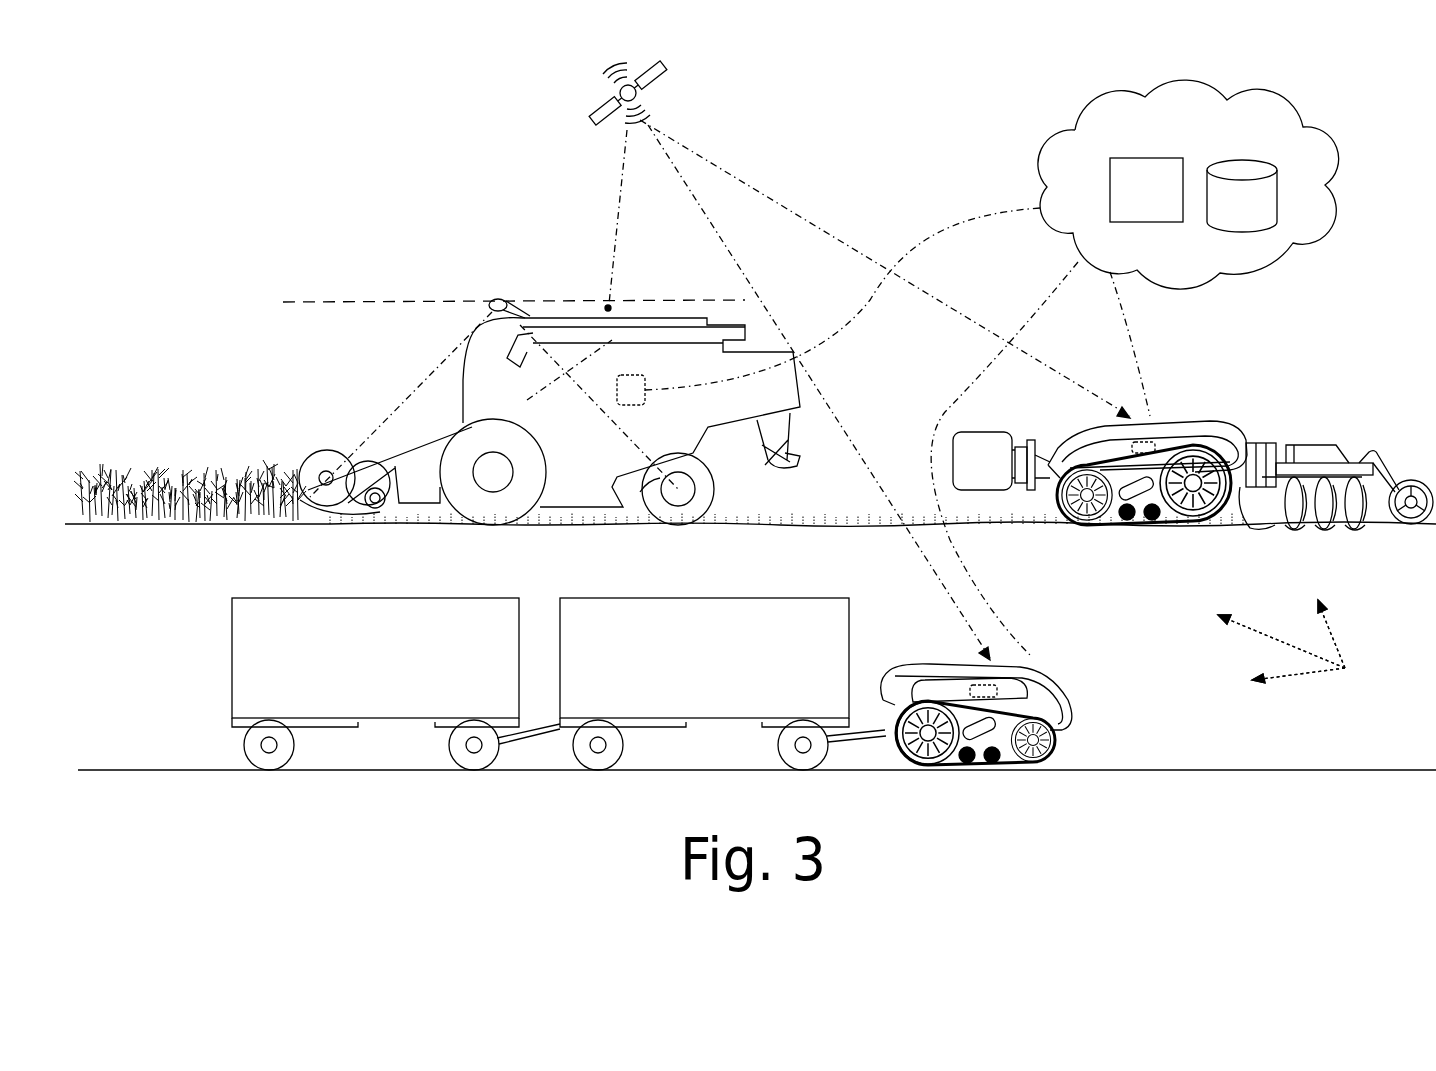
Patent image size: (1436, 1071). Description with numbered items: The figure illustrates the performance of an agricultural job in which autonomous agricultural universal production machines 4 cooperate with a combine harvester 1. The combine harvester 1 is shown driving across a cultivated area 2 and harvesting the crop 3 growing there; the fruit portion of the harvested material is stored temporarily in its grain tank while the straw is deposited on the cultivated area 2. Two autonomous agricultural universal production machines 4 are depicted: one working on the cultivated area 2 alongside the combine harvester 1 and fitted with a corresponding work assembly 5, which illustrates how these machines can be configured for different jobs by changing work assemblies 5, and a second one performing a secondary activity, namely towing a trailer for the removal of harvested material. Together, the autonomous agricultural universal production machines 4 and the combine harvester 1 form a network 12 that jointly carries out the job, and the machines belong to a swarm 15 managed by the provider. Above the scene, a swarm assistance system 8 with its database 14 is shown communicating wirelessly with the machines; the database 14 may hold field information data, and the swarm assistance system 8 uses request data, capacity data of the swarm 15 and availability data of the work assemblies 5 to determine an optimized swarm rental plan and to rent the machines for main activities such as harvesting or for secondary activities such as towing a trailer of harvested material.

The combine harvester 1 is at (582, 446).
The cultivated area 2 is at (838, 522).
The crop 3 is at (130, 470).
The autonomous agricultural universal production machine 4 is at (1165, 420).
The work assembly 5 is at (1308, 445).
The swarm assistance system 8 is at (1156, 206).
The database 14 is at (1262, 216).
The network 12 is at (1327, 645).
The swarm 15 is at (1352, 655).